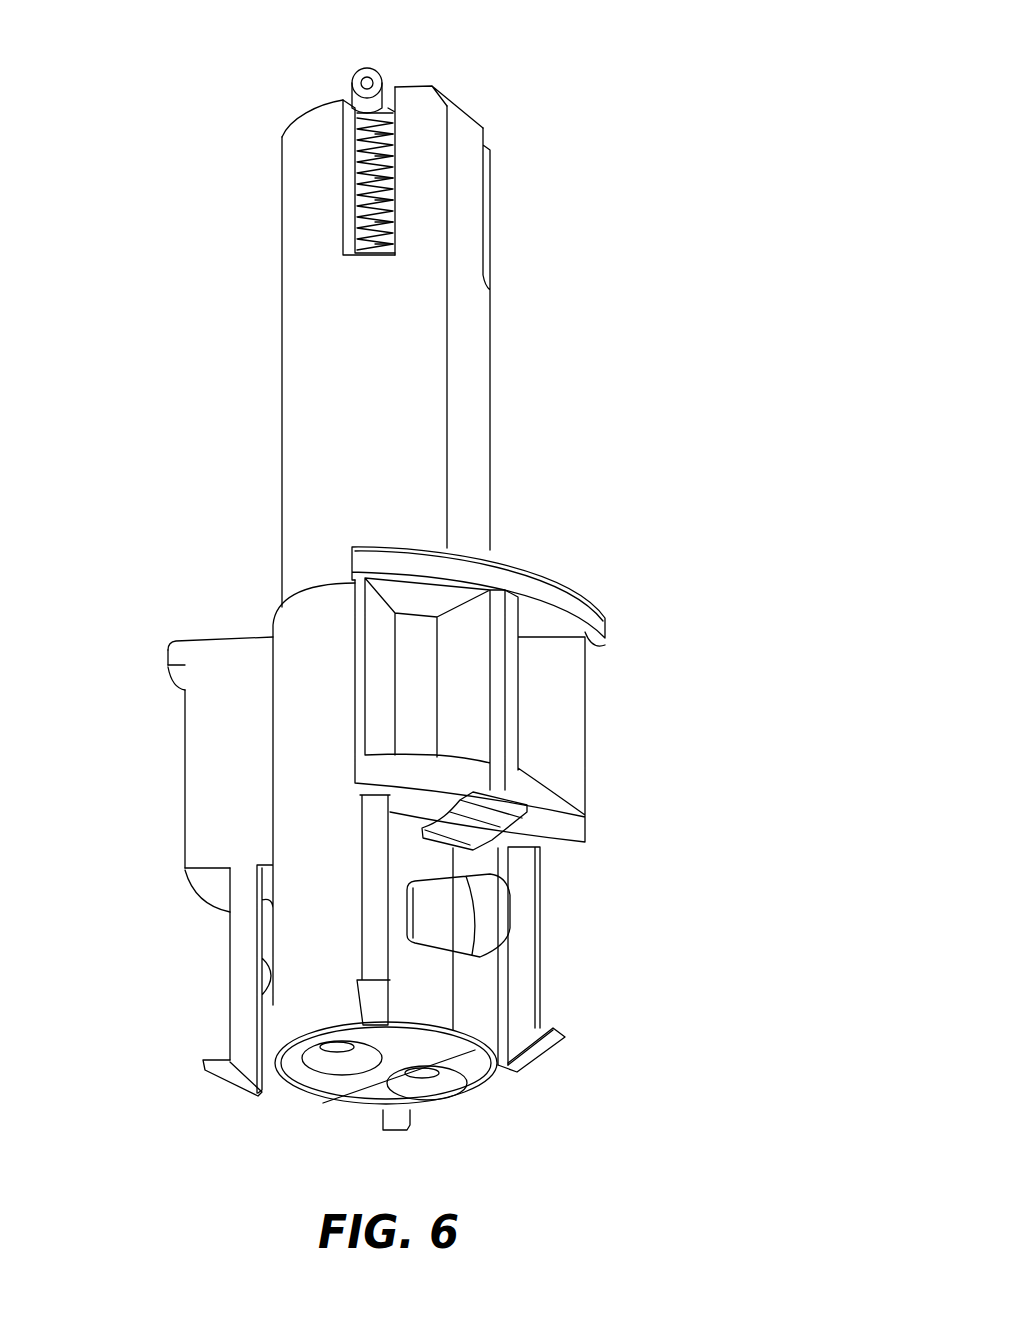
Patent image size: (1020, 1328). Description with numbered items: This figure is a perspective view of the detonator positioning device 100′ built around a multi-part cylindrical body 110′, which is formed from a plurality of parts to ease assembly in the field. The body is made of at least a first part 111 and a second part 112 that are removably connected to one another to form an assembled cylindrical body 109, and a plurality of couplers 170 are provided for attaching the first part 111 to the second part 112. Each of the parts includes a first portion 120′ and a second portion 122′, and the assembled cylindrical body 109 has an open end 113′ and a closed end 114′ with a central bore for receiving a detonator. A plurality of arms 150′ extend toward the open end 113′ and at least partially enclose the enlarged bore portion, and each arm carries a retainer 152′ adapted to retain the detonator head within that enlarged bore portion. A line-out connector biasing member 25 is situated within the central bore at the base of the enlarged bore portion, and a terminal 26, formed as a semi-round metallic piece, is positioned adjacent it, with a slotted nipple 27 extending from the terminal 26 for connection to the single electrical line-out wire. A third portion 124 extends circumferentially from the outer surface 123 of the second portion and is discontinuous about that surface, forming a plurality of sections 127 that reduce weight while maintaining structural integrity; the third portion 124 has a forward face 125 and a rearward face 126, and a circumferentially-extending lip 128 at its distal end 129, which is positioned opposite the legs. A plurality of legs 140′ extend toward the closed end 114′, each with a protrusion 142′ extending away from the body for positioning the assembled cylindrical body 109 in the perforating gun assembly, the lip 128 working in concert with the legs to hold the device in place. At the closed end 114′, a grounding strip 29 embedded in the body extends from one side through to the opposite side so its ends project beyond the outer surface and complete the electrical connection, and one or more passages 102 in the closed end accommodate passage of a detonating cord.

The detonator positioning device 100′ is at (594, 188).
The cylindrical body 110′ is at (252, 292).
The second part 112 is at (314, 402).
The arms 150′ is at (305, 184).
The retainer 152′ is at (330, 100).
The line-out connector biasing member 25 is at (362, 152).
The slotted nipple 27 is at (368, 68).
The terminal 26 is at (391, 110).
The open end 113′ is at (438, 72).
The first portion 120′ is at (468, 322).
The first part 111 is at (473, 413).
The assembled cylindrical body 109 is at (212, 549).
The distal end 129 is at (623, 553).
The sections 127 is at (534, 560).
The lip 128 is at (590, 632).
The third portion 124 is at (185, 806).
The forward face 125 is at (222, 635).
The rearward face 126 is at (212, 884).
The outer surface 123 is at (285, 1018).
The passages 102 is at (341, 1057).
The closed end 114′ is at (497, 1110).
The couplers 170 is at (488, 912).
The legs 140′ is at (527, 922).
The second portion 122′ is at (475, 998).
The protrusion 142′ is at (553, 1055).
The grounding strip 29 is at (533, 833).